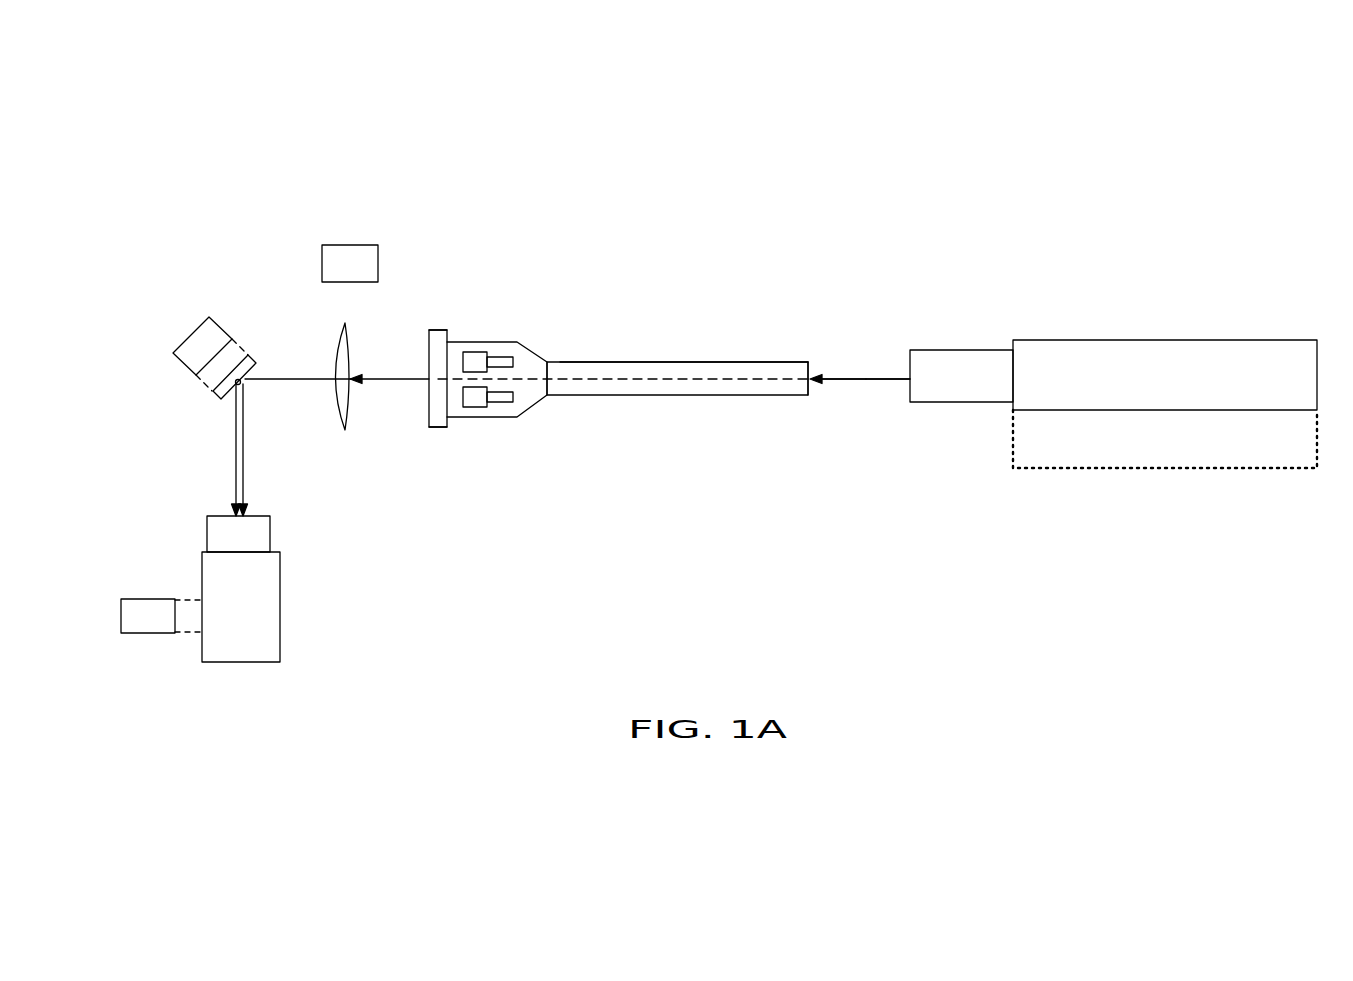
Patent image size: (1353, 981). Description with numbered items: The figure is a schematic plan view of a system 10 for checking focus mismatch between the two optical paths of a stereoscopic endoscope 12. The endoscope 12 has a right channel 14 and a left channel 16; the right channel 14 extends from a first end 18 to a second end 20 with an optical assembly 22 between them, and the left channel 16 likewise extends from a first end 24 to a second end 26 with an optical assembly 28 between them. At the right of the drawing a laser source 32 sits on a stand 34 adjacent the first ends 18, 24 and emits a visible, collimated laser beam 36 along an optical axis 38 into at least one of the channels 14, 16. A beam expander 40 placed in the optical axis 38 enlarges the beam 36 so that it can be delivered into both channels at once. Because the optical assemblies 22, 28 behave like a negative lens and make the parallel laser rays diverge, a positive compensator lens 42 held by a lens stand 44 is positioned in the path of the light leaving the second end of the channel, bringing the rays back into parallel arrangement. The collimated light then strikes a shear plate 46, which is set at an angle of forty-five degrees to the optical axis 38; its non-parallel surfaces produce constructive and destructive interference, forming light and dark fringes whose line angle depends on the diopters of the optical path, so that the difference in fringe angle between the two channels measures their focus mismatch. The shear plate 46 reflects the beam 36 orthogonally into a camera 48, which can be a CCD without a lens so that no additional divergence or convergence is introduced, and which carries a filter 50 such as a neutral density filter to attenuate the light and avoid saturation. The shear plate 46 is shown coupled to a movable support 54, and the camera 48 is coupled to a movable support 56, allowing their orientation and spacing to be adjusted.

The system 10 is at (130, 167).
The stereoscopic endoscope 12 is at (640, 198).
The right channel 14 is at (630, 397).
The left channel 16 is at (612, 362).
The first end 18 is at (810, 390).
The second end 20 is at (428, 405).
The optical assembly 22 is at (713, 385).
The first end 24 is at (808, 370).
The second end 26 is at (428, 347).
The optical assembly 28 is at (687, 360).
The laser source 32 is at (1180, 347).
The stand 34 is at (1187, 452).
The laser beam 36 is at (873, 379).
The optical axis 38 is at (858, 377).
The beam expander 40 is at (948, 350).
The compensator lens 42 is at (332, 332).
The lens stand 44 is at (352, 245).
The shear plate 46 is at (258, 362).
The camera 48 is at (283, 617).
The filter 50 is at (273, 533).
The movable support 54 is at (195, 328).
The movable support 56 is at (140, 599).